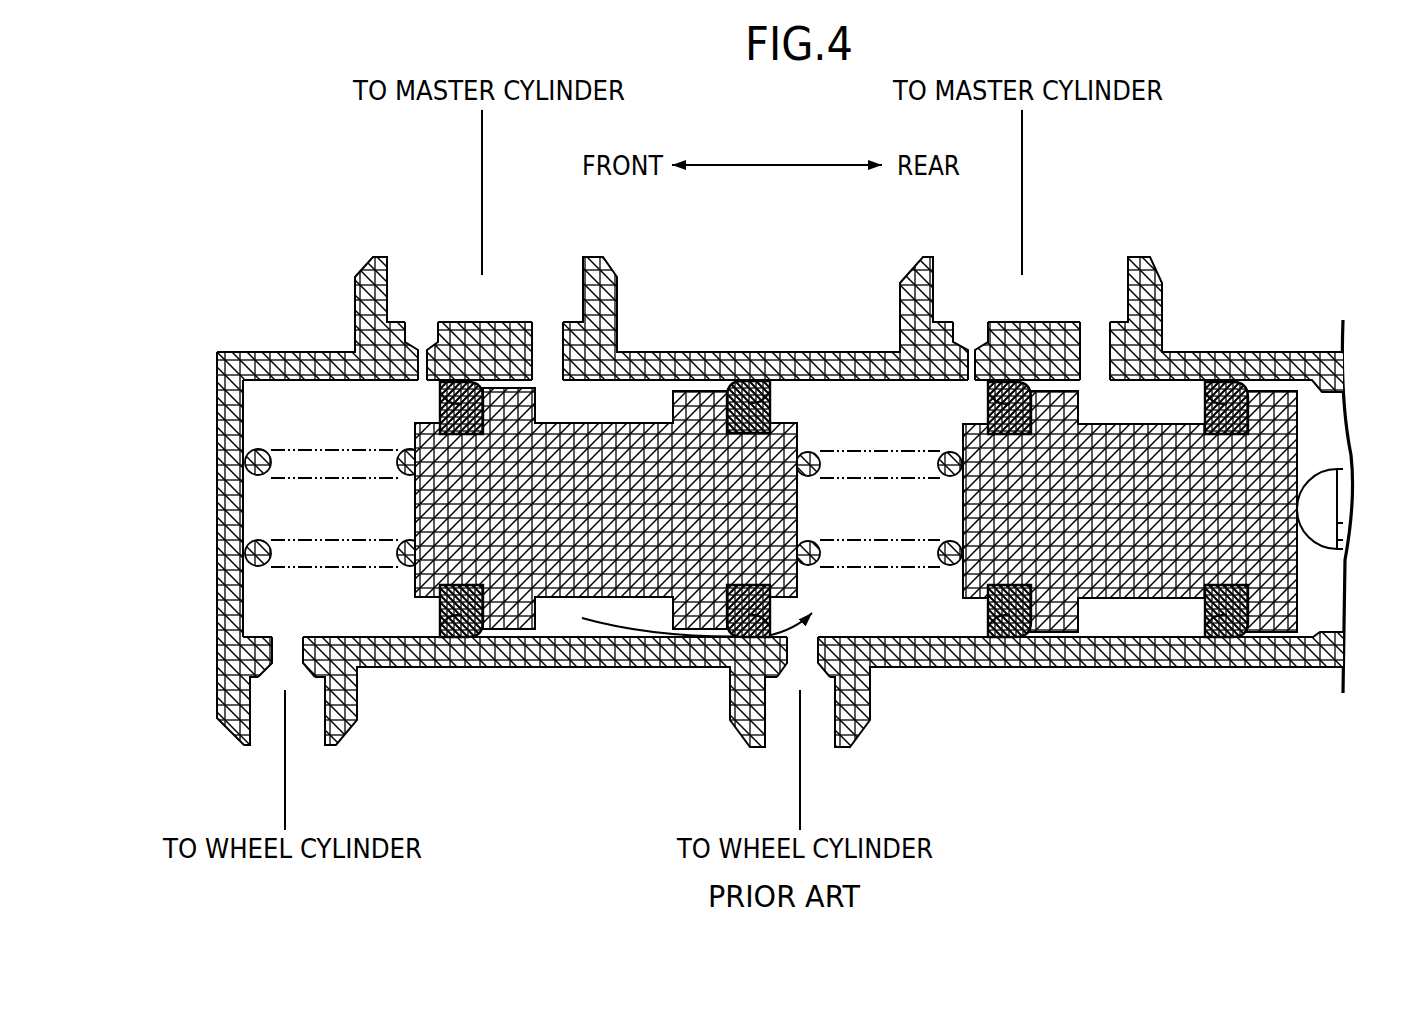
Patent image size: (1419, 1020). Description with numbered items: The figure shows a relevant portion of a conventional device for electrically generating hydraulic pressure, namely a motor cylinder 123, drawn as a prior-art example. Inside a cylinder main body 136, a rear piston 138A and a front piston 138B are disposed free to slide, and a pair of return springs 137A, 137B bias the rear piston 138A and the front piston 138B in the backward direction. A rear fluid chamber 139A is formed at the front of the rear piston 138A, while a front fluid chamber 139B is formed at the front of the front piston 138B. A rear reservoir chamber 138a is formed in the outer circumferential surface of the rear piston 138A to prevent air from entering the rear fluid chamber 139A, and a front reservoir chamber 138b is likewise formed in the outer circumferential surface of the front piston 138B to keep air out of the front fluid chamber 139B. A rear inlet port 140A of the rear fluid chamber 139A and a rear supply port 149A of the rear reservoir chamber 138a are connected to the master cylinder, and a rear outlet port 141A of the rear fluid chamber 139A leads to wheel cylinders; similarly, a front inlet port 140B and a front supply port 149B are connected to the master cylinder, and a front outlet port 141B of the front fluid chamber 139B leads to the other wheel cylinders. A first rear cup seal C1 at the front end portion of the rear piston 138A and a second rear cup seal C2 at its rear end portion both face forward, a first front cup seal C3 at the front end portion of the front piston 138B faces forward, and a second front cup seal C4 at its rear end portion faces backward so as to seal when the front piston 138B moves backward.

The motor cylinder 123 is at (724, 296).
The cylinder main body 136 is at (752, 352).
The return spring 137A is at (816, 453).
The return spring 137B is at (252, 452).
The rear piston 138A is at (1167, 528).
The front piston 138B is at (639, 528).
The rear reservoir chamber 138a is at (1175, 418).
The front reservoir chamber 138b is at (813, 411).
The rear fluid chamber 139A is at (916, 528).
The front fluid chamber 139B is at (362, 528).
The rear inlet port 140A is at (963, 336).
The front inlet port 140B is at (420, 330).
The rear outlet port 141A is at (805, 647).
The front outlet port 141B is at (288, 652).
The rear supply port 149A is at (1090, 340).
The front supply port 149B is at (543, 337).
The first rear cup seal C1 is at (1003, 640).
The second rear cup seal C2 is at (1222, 640).
The first front cup seal C3 is at (462, 637).
The second front cup seal C4 is at (745, 635).